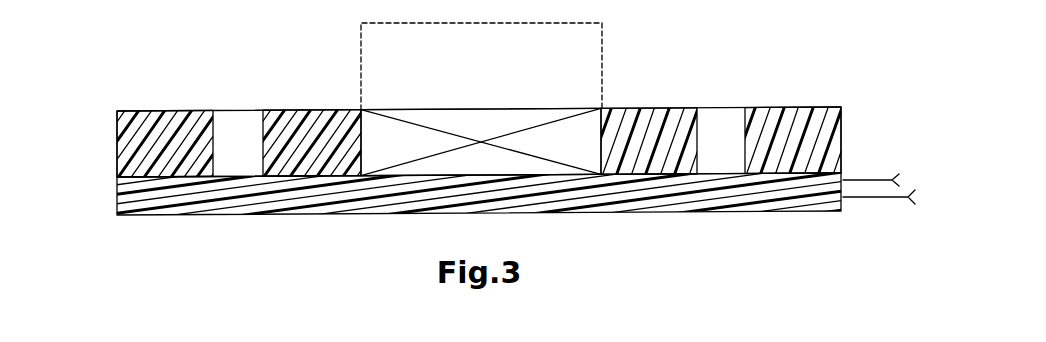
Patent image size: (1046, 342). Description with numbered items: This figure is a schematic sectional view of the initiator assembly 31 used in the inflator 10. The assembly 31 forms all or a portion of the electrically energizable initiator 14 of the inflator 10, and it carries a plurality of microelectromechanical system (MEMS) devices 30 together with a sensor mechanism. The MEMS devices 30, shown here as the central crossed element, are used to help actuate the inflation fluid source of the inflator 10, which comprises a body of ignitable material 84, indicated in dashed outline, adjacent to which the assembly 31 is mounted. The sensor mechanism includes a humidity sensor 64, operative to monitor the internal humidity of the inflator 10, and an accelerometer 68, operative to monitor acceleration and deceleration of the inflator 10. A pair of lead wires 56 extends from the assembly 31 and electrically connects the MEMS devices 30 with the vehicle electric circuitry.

The inflator 10 is at (225, 267).
The initiator 14 is at (335, 267).
The microelectromechanical system (MEMS) devices 30 is at (442, 118).
The assembly 31 is at (139, 238).
The lead wires 56 is at (873, 180).
The humidity sensor 64 is at (116, 139).
The accelerometer 68 is at (798, 107).
The body of ignitable material 84 is at (602, 45).